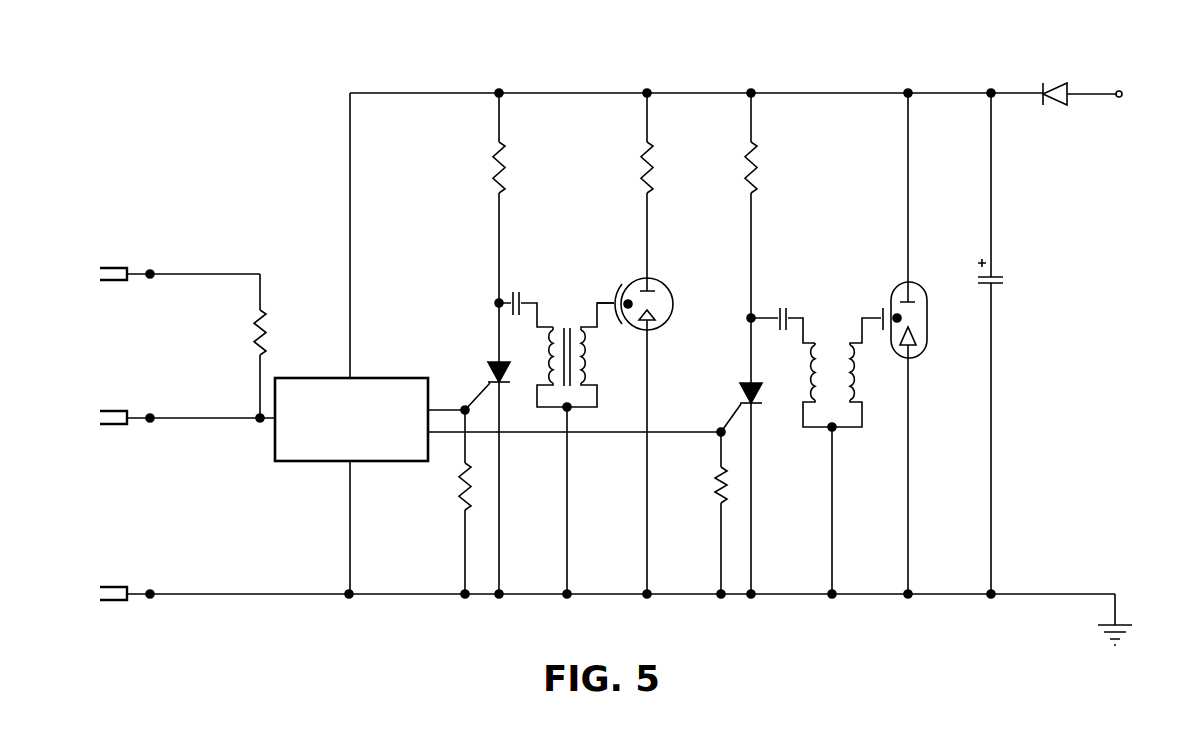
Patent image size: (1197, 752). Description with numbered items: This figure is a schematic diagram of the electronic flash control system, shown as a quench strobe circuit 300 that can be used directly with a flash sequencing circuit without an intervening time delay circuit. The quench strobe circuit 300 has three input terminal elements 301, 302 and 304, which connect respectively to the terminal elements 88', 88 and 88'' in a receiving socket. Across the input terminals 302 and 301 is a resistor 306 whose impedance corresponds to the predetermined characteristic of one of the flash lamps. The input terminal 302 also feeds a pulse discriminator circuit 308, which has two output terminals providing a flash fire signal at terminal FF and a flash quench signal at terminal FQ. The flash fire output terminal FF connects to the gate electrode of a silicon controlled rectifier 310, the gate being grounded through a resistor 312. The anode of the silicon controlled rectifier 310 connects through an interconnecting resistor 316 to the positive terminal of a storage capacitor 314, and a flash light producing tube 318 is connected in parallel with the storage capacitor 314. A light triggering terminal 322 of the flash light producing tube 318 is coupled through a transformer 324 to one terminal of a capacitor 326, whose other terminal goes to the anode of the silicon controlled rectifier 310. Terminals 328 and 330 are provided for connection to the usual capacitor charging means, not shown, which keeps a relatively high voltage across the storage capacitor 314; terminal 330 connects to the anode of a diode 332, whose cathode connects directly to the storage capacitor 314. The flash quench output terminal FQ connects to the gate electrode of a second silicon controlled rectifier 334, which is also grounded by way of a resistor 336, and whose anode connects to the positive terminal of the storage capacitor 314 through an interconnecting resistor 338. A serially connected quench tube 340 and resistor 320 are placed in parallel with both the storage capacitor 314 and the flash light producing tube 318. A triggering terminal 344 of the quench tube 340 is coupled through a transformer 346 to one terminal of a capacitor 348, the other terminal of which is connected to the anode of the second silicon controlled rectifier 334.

The quench strobe circuit 300 is at (449, 89).
The terminal element 88 is at (187, 389).
The terminal element 88' is at (180, 237).
The terminal element 88'' is at (116, 573).
The input terminal element 301 is at (150, 271).
The input terminal element 302 is at (152, 416).
The input terminal element 304 is at (151, 593).
The resistor 306 is at (267, 325).
The pulse discriminator circuit 308 is at (378, 463).
The silicon controlled rectifier 310 is at (762, 392).
The resistor 312 is at (713, 487).
The storage capacitor 314 is at (1002, 283).
The resistor 316 is at (765, 168).
The flash light producing tube 318 is at (928, 340).
The resistor 320 is at (658, 168).
The light triggering terminal 322 is at (880, 326).
The transformer 324 is at (823, 345).
The capacitor 326 is at (784, 306).
The terminal 328 is at (1117, 594).
The terminal 330 is at (1123, 91).
The diode 332 is at (1053, 83).
The second silicon controlled rectifier 334 is at (488, 372).
The resistor 336 is at (456, 490).
The resistor 338 is at (512, 168).
The quench tube 340 is at (659, 328).
The triggering terminal 344 is at (600, 302).
The transformer 346 is at (590, 358).
The capacitor 348 is at (520, 290).